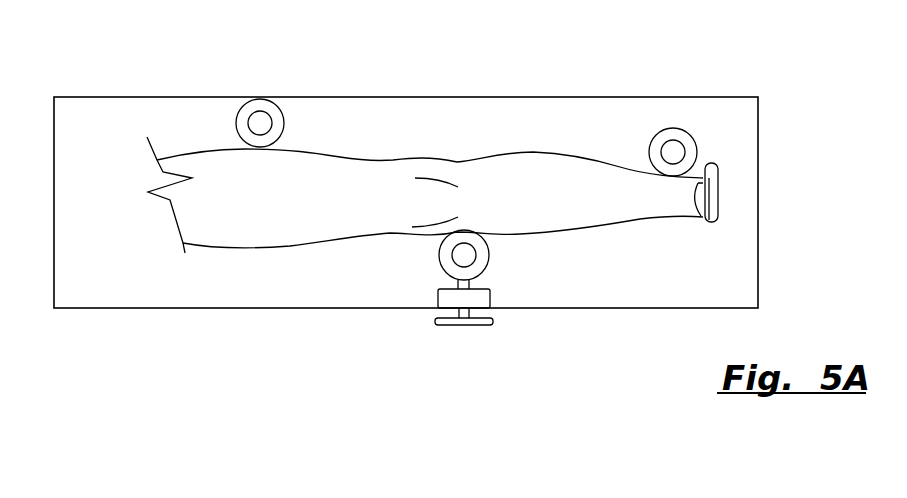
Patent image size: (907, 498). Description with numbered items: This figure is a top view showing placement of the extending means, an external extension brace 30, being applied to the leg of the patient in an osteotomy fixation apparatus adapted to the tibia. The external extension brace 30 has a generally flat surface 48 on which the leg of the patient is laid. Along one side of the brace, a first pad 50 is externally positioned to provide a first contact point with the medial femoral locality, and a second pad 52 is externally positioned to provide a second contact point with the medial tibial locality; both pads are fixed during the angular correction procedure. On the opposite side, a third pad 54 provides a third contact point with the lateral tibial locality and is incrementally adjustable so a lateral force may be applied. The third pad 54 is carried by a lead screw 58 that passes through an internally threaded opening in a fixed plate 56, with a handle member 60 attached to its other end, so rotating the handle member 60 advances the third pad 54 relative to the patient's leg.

The external extension brace 30 is at (467, 58).
The flat surface 48 is at (243, 300).
The first pad 50 is at (254, 99).
The second pad 52 is at (673, 128).
The third pad 54 is at (515, 262).
The fixed plate 56 is at (448, 302).
The lead screw 58 is at (475, 313).
The handle member 60 is at (465, 323).